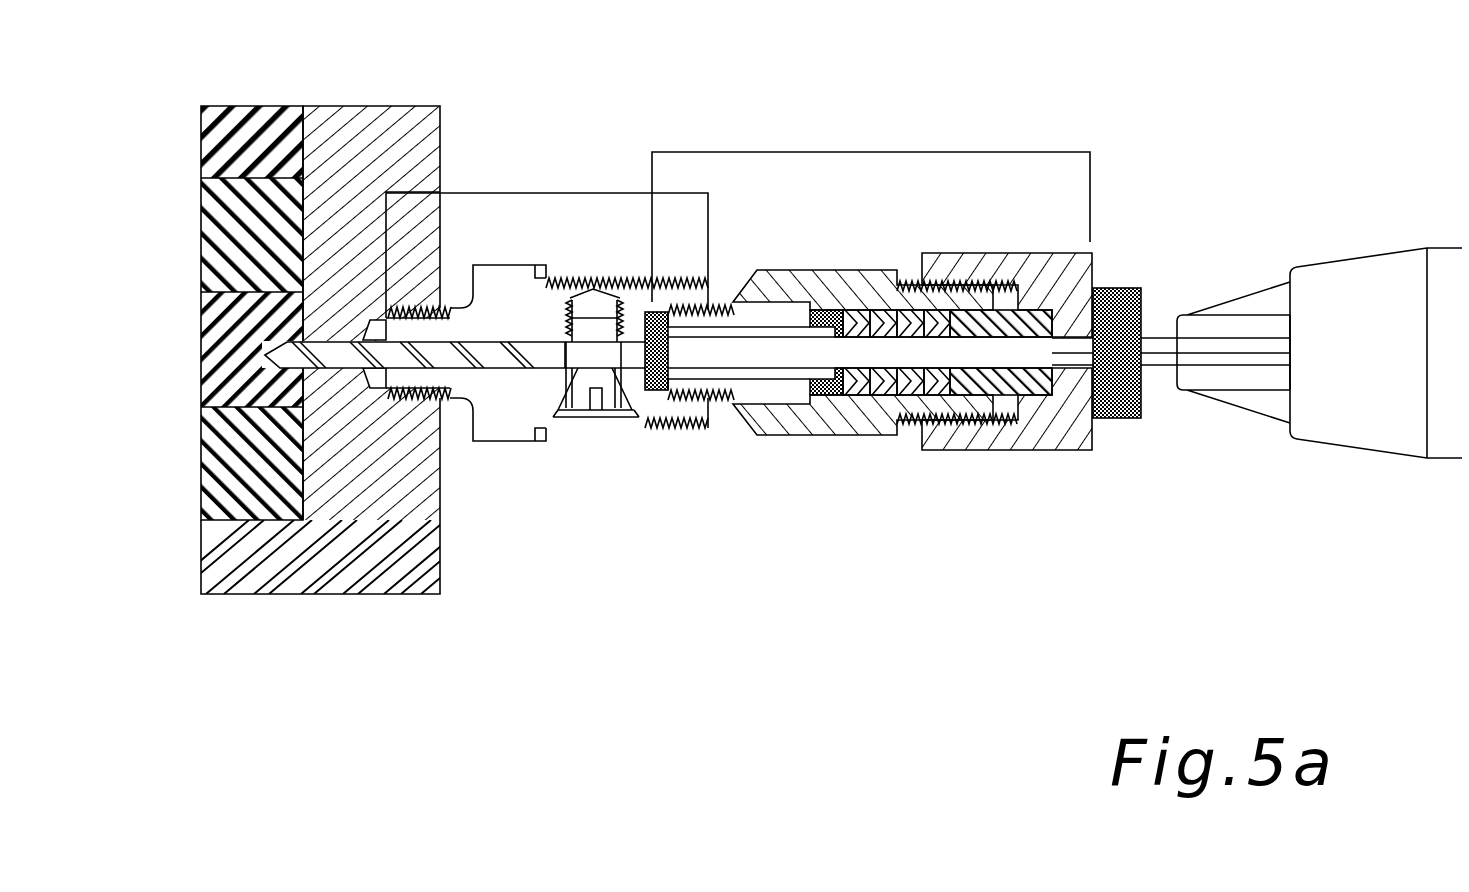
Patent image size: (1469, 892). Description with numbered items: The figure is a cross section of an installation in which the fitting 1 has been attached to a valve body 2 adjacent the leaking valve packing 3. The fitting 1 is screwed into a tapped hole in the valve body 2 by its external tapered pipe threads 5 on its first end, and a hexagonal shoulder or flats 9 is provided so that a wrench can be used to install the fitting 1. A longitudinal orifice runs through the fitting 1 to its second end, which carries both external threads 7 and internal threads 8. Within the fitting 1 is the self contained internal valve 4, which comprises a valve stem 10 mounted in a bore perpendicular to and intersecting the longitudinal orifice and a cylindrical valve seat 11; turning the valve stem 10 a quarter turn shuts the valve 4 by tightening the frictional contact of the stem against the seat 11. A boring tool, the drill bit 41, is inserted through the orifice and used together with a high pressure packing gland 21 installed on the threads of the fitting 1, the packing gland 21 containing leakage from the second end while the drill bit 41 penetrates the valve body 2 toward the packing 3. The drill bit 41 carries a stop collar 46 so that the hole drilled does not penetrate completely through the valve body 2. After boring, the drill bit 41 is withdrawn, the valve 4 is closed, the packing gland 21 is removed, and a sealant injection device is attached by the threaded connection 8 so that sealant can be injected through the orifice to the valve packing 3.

The fitting 1 is at (500, 193).
The valve body 2 is at (375, 135).
The valve packing 3 is at (262, 125).
The self contained internal valve 4 is at (572, 378).
The external tapered pipe threads 5 is at (400, 300).
The external threads 7 is at (692, 280).
The internal threads 8 is at (648, 395).
The hexagonal shoulder or flats 9 is at (493, 277).
The valve stem 10 is at (612, 387).
The cylindrical valve seat 11 is at (565, 377).
The high pressure packing gland 21 is at (848, 152).
The drill bit 41 is at (295, 352).
The stop collar 46 is at (672, 392).